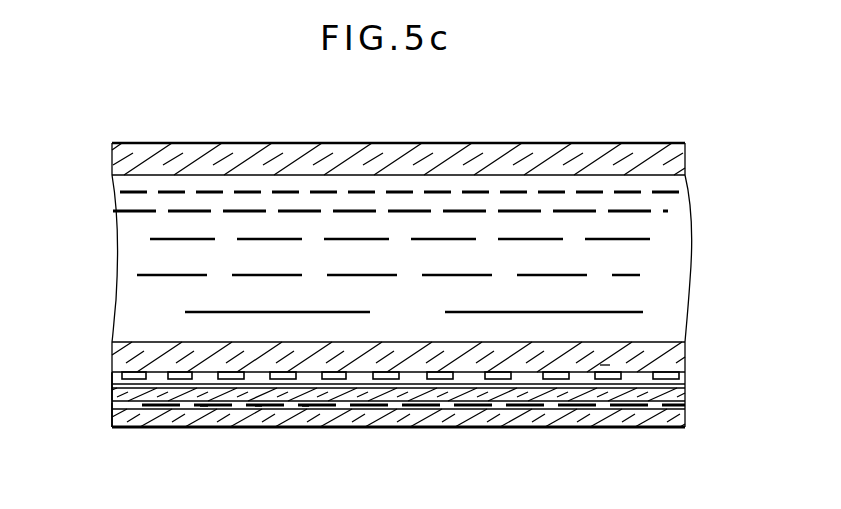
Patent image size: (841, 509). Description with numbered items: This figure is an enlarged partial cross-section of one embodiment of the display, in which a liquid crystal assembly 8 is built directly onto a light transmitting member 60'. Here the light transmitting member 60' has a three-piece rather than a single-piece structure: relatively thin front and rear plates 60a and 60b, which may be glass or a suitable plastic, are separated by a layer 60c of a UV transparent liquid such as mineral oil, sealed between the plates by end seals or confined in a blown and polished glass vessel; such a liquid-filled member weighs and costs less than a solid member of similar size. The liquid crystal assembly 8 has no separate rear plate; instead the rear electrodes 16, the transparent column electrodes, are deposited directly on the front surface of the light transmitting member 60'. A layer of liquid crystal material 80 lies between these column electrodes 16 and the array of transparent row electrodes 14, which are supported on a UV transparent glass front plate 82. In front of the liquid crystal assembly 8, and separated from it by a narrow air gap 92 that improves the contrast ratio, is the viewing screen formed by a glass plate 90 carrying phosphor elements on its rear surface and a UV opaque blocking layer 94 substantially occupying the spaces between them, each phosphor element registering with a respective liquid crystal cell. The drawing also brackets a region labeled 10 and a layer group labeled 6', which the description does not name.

The light transmitting member 60' is at (371, 256).
The front plate 60a is at (676, 158).
The liquid layer 60c is at (672, 231).
The rear plate 60b is at (678, 348).
The transparent column electrodes 16 is at (605, 365).
The layer of liquid crystal material 80 is at (688, 372).
The transparent row electrodes 14 is at (686, 385).
The glass front plate 82 is at (685, 394).
The air gap 92 is at (683, 404).
The glass plate 90 is at (580, 430).
The UV opaque blocking layer 94 is at (305, 406).
The light valve assembly 10 is at (72, 373).
The upper layer portion 6' is at (95, 386).
The liquid crystal assembly 8 is at (108, 403).